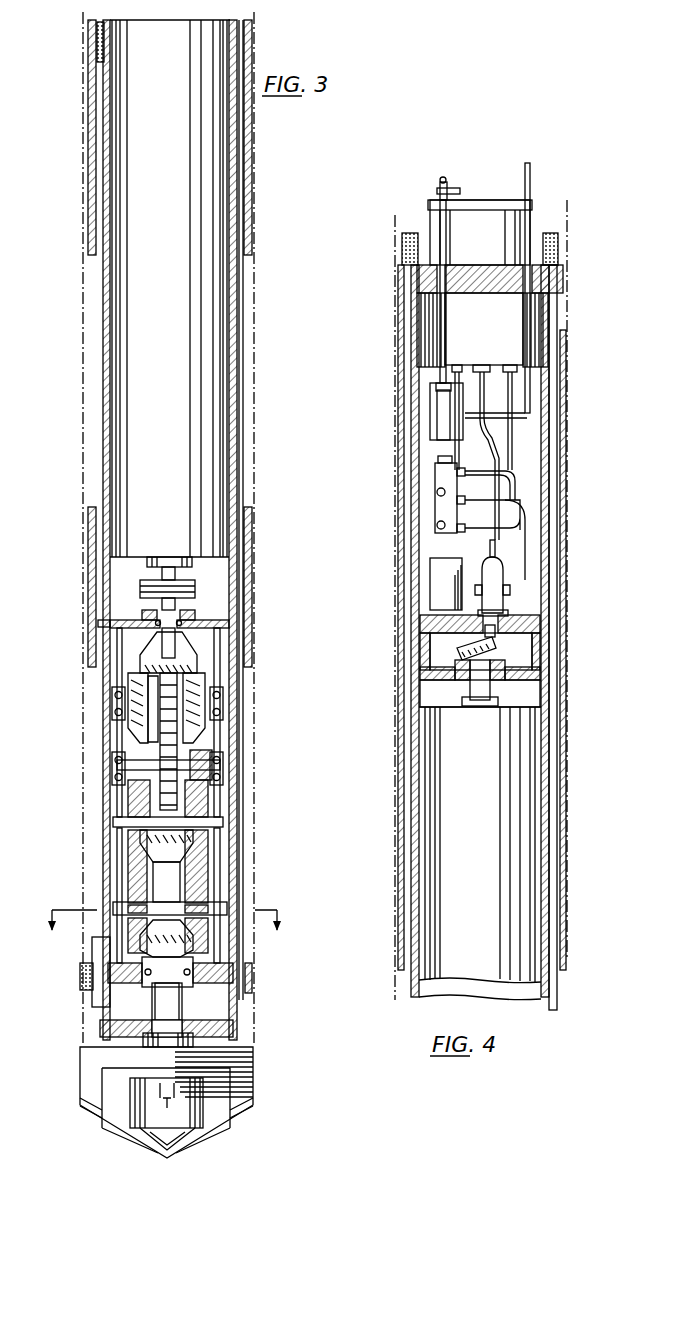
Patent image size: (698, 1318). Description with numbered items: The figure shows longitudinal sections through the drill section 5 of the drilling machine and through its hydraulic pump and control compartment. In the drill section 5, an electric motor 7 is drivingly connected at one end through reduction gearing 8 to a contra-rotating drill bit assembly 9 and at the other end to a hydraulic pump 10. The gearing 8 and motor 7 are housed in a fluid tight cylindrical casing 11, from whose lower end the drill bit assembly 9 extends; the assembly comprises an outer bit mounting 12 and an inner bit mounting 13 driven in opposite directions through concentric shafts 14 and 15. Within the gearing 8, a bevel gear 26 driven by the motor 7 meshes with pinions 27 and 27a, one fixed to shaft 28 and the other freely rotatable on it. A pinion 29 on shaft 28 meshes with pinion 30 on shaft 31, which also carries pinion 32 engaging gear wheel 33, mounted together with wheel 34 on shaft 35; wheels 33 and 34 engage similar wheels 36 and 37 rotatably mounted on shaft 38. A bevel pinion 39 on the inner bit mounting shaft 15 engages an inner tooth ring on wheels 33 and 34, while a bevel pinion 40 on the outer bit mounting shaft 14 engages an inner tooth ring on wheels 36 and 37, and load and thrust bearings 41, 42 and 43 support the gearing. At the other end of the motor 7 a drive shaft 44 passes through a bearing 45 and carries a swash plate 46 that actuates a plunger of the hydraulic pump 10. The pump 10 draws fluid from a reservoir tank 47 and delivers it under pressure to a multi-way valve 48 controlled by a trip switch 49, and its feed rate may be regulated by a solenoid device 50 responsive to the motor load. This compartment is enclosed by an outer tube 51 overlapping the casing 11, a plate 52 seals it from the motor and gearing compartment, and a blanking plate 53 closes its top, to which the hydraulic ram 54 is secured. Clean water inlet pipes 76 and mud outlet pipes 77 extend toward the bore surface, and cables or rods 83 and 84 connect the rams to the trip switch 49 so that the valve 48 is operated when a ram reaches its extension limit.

In FIG. 3, the drill section 5 is at (272, 468).
In FIG. 4, the drill section 5 is at (585, 425).
In FIG. 3, the electric motor 7 is at (170, 288).
In FIG. 4, the electric motor 7 is at (480, 853).
In FIG. 3, the reduction gearing 8 is at (290, 740).
In FIG. 3, the contra-rotating drill bit assembly 9 is at (268, 1113).
In FIG. 4, the hydraulic pump 10 is at (500, 592).
In FIG. 3, the cylindrical casing 11 is at (105, 208).
In FIG. 4, the cylindrical casing 11 is at (548, 728).
In FIG. 3, the outer bit mounting 12 is at (90, 1070).
In FIG. 3, the inner bit mounting 13 is at (135, 1095).
In FIG. 3, the outer bit mounting shaft 14 is at (165, 995).
In FIG. 3, the inner bit mounting shaft 15 is at (165, 880).
In FIG. 3, the bevel gear 26 is at (182, 662).
In FIG. 3, the pinion 27 is at (205, 690).
In FIG. 3, the pinion 27a is at (140, 690).
In FIG. 3, the shaft 28 is at (218, 700).
In FIG. 3, the pinion 29 is at (118, 700).
In FIG. 3, the pinion 30 is at (160, 748).
In FIG. 3, the shaft 31 is at (120, 765).
In FIG. 3, the pinion 32 is at (200, 765).
In FIG. 3, the gear wheel 33 is at (205, 797).
In FIG. 3, the gear wheel 34 is at (135, 800).
In FIG. 3, the shaft 35 is at (118, 822).
In FIG. 3, the gear wheel 36 is at (195, 880).
In FIG. 3, the gear wheel 37 is at (135, 905).
In FIG. 3, the shaft 38 is at (220, 908).
In FIG. 3, the bevel pinion 39 is at (160, 860).
In FIG. 3, the bevel pinion 40 is at (160, 940).
In FIG. 3, the load and thrust bearing 41 is at (200, 1040).
In FIG. 3, the load and thrust bearing 42 is at (240, 975).
In FIG. 3, the load and thrust bearing 43 is at (215, 622).
In FIG. 4, the drive shaft 44 is at (500, 690).
In FIG. 4, the bearing 45 is at (450, 680).
In FIG. 4, the swash plate 46 is at (460, 650).
In FIG. 4, the reservoir tank 47 is at (484, 329).
In FIG. 4, the multi-way valve 48 is at (445, 507).
In FIG. 4, the trip switch 49 is at (442, 425).
In FIG. 4, the solenoid device 50 is at (445, 575).
In FIG. 3, the outer tube 51 is at (92, 150).
In FIG. 4, the outer tube 51 is at (560, 648).
In FIG. 4, the plate 52 is at (535, 622).
In FIG. 4, the blanking plate 53 is at (418, 280).
In FIG. 4, the hydraulic ram 54 is at (500, 225).
In FIG. 3, the clean water inlet pipe 76 is at (97, 35).
In FIG. 4, the clean water inlet pipe 76 is at (410, 247).
In FIG. 3, the mud outlet pipe 77 is at (236, 845).
In FIG. 4, the mud outlet pipe 77 is at (556, 248).
In FIG. 4, the cable or rod 83 is at (440, 335).
In FIG. 4, the cable or rod 84 is at (530, 328).